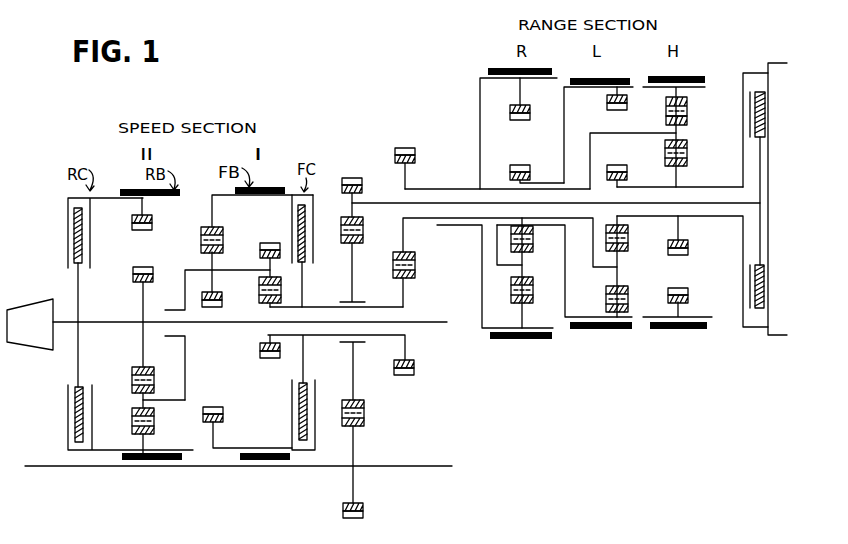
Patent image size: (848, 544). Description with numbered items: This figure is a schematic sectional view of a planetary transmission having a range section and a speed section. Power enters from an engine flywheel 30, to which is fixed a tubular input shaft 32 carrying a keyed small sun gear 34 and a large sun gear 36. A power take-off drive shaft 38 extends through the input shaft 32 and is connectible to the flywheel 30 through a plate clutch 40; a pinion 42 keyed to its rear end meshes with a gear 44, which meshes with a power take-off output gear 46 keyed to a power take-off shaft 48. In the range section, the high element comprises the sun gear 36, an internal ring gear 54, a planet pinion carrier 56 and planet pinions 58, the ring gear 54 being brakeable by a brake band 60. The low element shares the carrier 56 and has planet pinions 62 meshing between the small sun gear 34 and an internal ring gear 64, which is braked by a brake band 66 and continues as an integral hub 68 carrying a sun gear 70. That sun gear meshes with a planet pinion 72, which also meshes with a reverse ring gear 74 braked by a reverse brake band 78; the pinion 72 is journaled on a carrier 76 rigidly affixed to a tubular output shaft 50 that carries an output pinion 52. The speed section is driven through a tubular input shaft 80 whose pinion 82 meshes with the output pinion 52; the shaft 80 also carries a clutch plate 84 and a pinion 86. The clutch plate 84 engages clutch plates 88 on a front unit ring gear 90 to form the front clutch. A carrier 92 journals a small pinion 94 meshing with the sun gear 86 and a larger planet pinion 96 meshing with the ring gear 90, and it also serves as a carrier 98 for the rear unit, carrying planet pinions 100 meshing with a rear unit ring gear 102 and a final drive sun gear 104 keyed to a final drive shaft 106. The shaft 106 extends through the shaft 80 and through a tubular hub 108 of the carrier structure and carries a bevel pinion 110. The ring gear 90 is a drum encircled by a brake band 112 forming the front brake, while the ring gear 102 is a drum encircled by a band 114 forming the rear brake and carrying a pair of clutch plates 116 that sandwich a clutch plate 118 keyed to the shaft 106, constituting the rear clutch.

The flywheel 30 is at (778, 337).
The input shaft 32 is at (738, 186).
The small sun gear 34 is at (625, 165).
The large sun gear 36 is at (688, 150).
The power take-off drive shaft 38 is at (382, 202).
The plate clutch 40 is at (757, 308).
The pinion 42 is at (354, 177).
The gear 44 is at (364, 236).
The power take-off output gear 46 is at (365, 421).
The power take-off shaft 48 is at (418, 466).
The tubular output shaft 50 is at (423, 188).
The output pinion 52 is at (404, 147).
The internal ring gear 54 is at (688, 103).
The planet pinion carrier 56 is at (650, 133).
The planet pinion 58 is at (688, 120).
The brake band 60 is at (680, 330).
The planet pinion 62 is at (628, 290).
The internal ring gear 64 is at (628, 306).
The brake band 66 is at (617, 330).
The integral hub 68 is at (542, 182).
The sun gear 70 is at (520, 164).
The planet pinion 72 is at (533, 248).
The reverse ring gear 74 is at (532, 296).
The carrier 76 is at (500, 266).
The reverse brake band 78 is at (541, 340).
The input shaft 80 is at (403, 307).
The pinion 82 is at (416, 270).
The clutch plate 84 is at (308, 287).
The pinion 86 is at (268, 358).
The clutch plates 88 is at (291, 403).
The front unit ring gear 90 is at (222, 418).
The carrier 92 is at (184, 279).
The small pinion 94 is at (270, 243).
The larger planet pinion 96 is at (222, 240).
The carrier 98 is at (174, 401).
The planet pinion 100 is at (133, 380).
The rear unit ring gear 102 is at (133, 428).
The final drive sun gear 104 is at (133, 278).
The final drive shaft 106 is at (116, 322).
The tubular hub 108 is at (186, 335).
The bevel pinion 110 is at (36, 297).
The brake band 112 is at (263, 461).
The band 114 is at (150, 461).
The clutch plates 116 is at (67, 219).
The clutch plate 118 is at (76, 368).